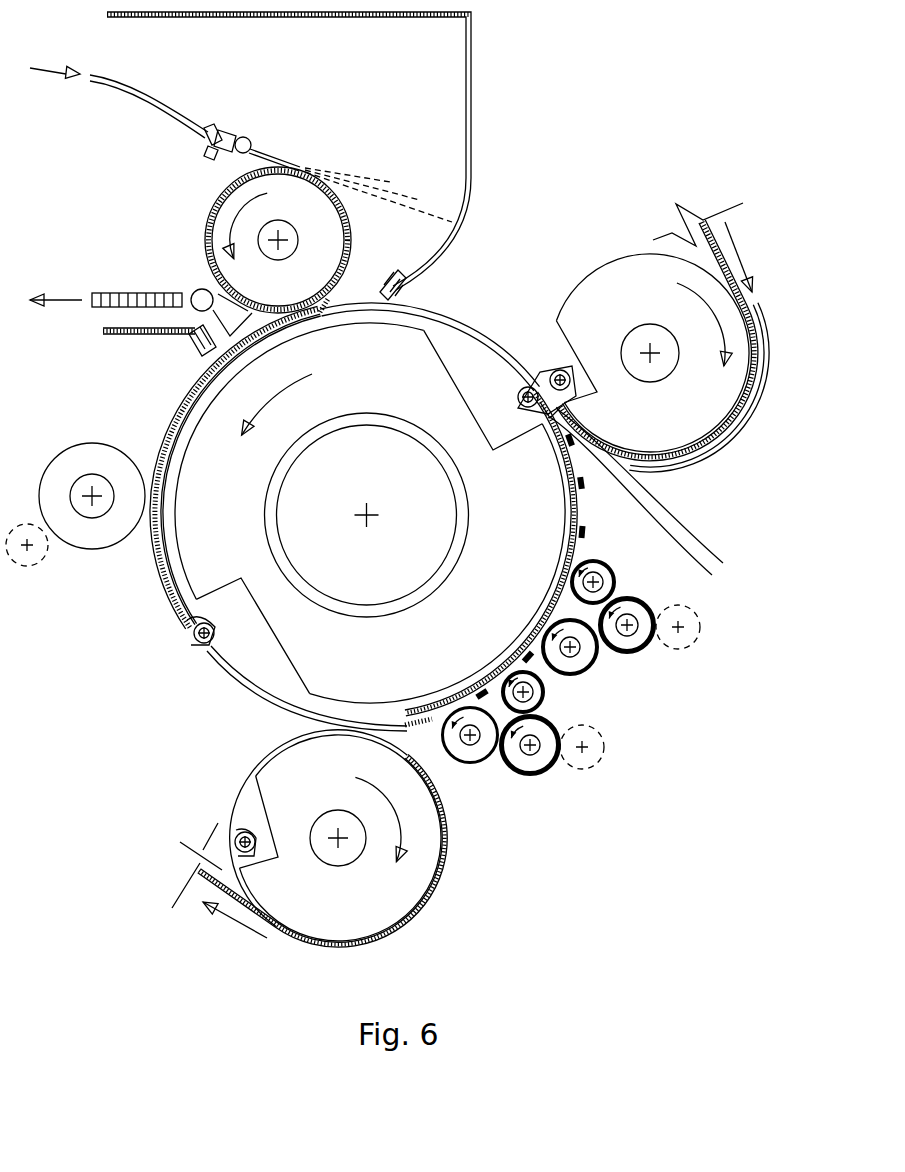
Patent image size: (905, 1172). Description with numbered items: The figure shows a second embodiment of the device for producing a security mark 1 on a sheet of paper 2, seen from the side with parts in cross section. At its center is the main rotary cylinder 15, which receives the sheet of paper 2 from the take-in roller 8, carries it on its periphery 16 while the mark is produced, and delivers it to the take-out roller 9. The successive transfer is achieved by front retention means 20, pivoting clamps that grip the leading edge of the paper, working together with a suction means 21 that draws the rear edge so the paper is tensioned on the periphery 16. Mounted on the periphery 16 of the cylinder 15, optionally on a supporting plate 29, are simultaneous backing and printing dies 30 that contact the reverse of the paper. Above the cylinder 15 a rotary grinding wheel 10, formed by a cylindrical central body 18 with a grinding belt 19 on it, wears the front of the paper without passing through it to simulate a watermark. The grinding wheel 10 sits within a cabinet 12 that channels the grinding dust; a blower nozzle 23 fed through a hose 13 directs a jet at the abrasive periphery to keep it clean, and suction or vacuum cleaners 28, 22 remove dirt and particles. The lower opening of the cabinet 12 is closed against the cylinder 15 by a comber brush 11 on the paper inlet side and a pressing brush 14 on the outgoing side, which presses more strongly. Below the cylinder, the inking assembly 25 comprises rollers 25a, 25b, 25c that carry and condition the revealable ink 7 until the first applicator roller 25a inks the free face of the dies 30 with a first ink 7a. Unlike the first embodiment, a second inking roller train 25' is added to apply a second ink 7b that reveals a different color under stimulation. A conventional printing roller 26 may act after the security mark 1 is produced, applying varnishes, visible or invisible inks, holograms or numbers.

The security mark 1 is at (163, 570).
The sheet of paper 2 is at (750, 305).
The revealable ink 7 is at (583, 498).
The first ink 7a is at (645, 659).
The second ink 7b is at (482, 763).
The take-in roller 8 is at (630, 311).
The take-out roller 9 is at (330, 791).
The rotary grinding wheel 10 is at (219, 240).
The comber brush 11 is at (386, 262).
The cabinet 12 is at (460, 58).
The hose 13 is at (178, 117).
The pressing brush 14 is at (182, 362).
The main rotary cylinder 15 is at (380, 398).
The periphery 16 is at (540, 368).
The central body 18 is at (317, 213).
The grinding belt 19 is at (196, 198).
The front retention means 20 is at (556, 372).
The suction means 21 is at (357, 357).
The suction or vacuum cleaner 22 is at (690, 556).
The blower nozzle 23 is at (272, 148).
The inking assembly 25 is at (681, 689).
The second inking roller train 25' is at (572, 797).
The first applicator roller 25a is at (617, 570).
The inking roller 25b is at (577, 663).
The inking roller 25c is at (640, 641).
The conventional printing roller 26 is at (68, 563).
The suction or vacuum cleaner 28 is at (150, 298).
The supporting plate 29 is at (423, 308).
The simultaneous backing and printing die 30 is at (182, 392).